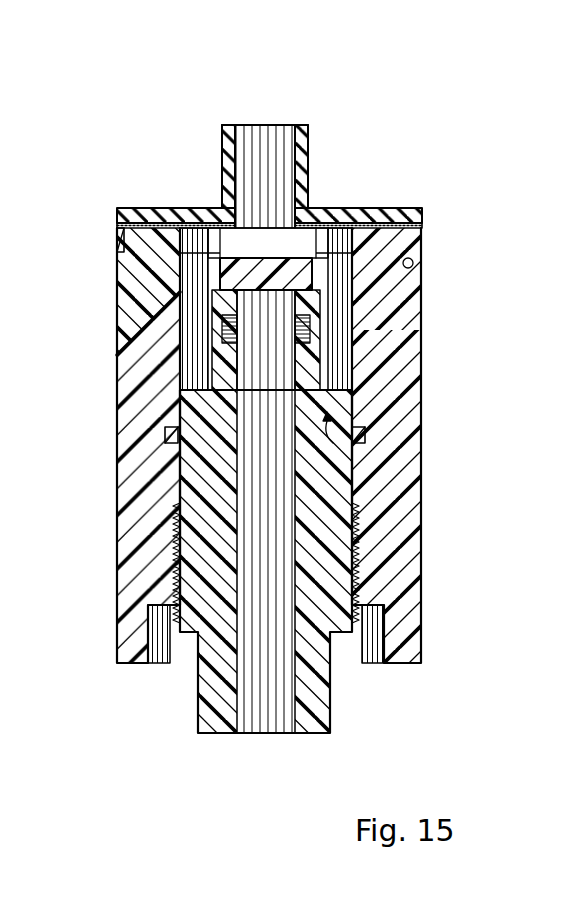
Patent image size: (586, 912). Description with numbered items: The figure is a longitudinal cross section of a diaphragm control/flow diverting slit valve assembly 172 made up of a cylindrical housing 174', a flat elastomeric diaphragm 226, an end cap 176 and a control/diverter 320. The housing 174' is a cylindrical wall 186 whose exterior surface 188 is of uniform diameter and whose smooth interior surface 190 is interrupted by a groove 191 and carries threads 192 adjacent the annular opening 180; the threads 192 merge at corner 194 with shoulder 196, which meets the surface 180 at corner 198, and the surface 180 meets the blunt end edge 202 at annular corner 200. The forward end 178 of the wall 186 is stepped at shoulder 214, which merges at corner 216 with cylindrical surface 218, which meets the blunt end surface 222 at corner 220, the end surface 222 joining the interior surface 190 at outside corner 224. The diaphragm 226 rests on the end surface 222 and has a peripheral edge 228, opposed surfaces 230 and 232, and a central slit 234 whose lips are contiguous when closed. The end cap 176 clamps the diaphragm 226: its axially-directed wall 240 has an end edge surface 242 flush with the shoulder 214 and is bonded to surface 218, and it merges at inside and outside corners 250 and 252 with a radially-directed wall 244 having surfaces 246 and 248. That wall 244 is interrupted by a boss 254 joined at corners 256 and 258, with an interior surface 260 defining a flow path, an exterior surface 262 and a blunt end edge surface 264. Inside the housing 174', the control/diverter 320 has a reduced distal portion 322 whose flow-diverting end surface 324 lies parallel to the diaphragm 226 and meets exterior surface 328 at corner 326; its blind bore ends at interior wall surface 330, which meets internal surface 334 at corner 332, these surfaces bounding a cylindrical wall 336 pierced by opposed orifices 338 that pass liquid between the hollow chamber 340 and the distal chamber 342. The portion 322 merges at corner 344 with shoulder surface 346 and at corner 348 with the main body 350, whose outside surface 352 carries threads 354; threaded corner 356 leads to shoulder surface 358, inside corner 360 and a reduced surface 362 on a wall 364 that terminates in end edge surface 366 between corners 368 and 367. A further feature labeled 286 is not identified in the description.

The diaphragm control/flow diverting slit valve assembly 172 is at (348, 182).
The cylindrical housing 174' is at (331, 445).
The end cap 176 is at (424, 212).
The forward end 178 is at (117, 245).
The annular opening 180 is at (428, 640).
The cylindrical wall 186 is at (395, 470).
The exterior surface 188 is at (400, 492).
The interior surface 190 is at (185, 262).
The groove 191 is at (440, 412).
The threads 192 is at (180, 495).
The corner 194 is at (122, 572).
The shoulder 196 is at (375, 560).
The corner 198 is at (365, 592).
The annular corner 200 is at (190, 668).
The blunt end edge 202 is at (150, 667).
The shoulder 214 is at (117, 252).
The corner 216 is at (375, 258).
The cylindrical surface 218 is at (388, 240).
The corner 220 is at (117, 238).
The end surface 222 is at (128, 222).
The outside corner 224 is at (350, 280).
The diaphragm 226 is at (255, 160).
The peripheral edge 228 is at (395, 232).
The radially directed surface 230 is at (190, 222).
The radially directed surface 232 is at (180, 230).
The central slit 234 is at (268, 170).
The axially-directed annular wall 240 is at (380, 248).
The end edge surface 242 is at (118, 258).
The radially-directed annular wall 244 is at (415, 222).
The radially directed surface 246 is at (374, 204).
The radially directed surface 248 is at (357, 272).
The inside corner 250 is at (365, 265).
The outside corner 252 is at (405, 226).
The boss 254 is at (320, 208).
The corner 256 is at (328, 214).
The corner 258 is at (335, 222).
The interior cylindrical surface 260 is at (240, 128).
The exterior cylindrical surface 262 is at (222, 135).
The blunt end edge surface 264 is at (305, 195).
The housing inner surface 286 is at (130, 405).
The control/diverter 320 is at (366, 437).
The distal cylindrical portion 322 is at (342, 290).
The flow-diverting end edge surface 324 is at (200, 210).
The annular outside corner 326 is at (170, 240).
The exterior cylindrical surface 328 is at (200, 285).
The interior wall surface 330 is at (335, 300).
The annular inside corner 332 is at (200, 280).
The internal cylindrical surface 334 is at (182, 355).
The cylindrical wall 336 is at (325, 330).
The orifices 338 is at (225, 300).
The hollow chamber 340 is at (283, 583).
The distal chamber 342 is at (345, 226).
The annular corner 344 is at (318, 345).
The radially-directed annular surface 346 is at (312, 360).
The outside annular corner 348 is at (120, 385).
The main cylindrical body 350 is at (380, 452).
The outside cylindrical surface 352 is at (168, 435).
The threads 354 is at (178, 545).
The threaded outside corner 356 is at (385, 655).
The shoulder surface 358 is at (155, 628).
The inside annular corner 360 is at (347, 668).
The diametrally reduced cylindrical surface 362 is at (198, 700).
The cylindrical wall 364 is at (332, 695).
The blunt end edge surface 366 is at (230, 735).
The corner 367 is at (285, 740).
The annular corner 368 is at (300, 737).